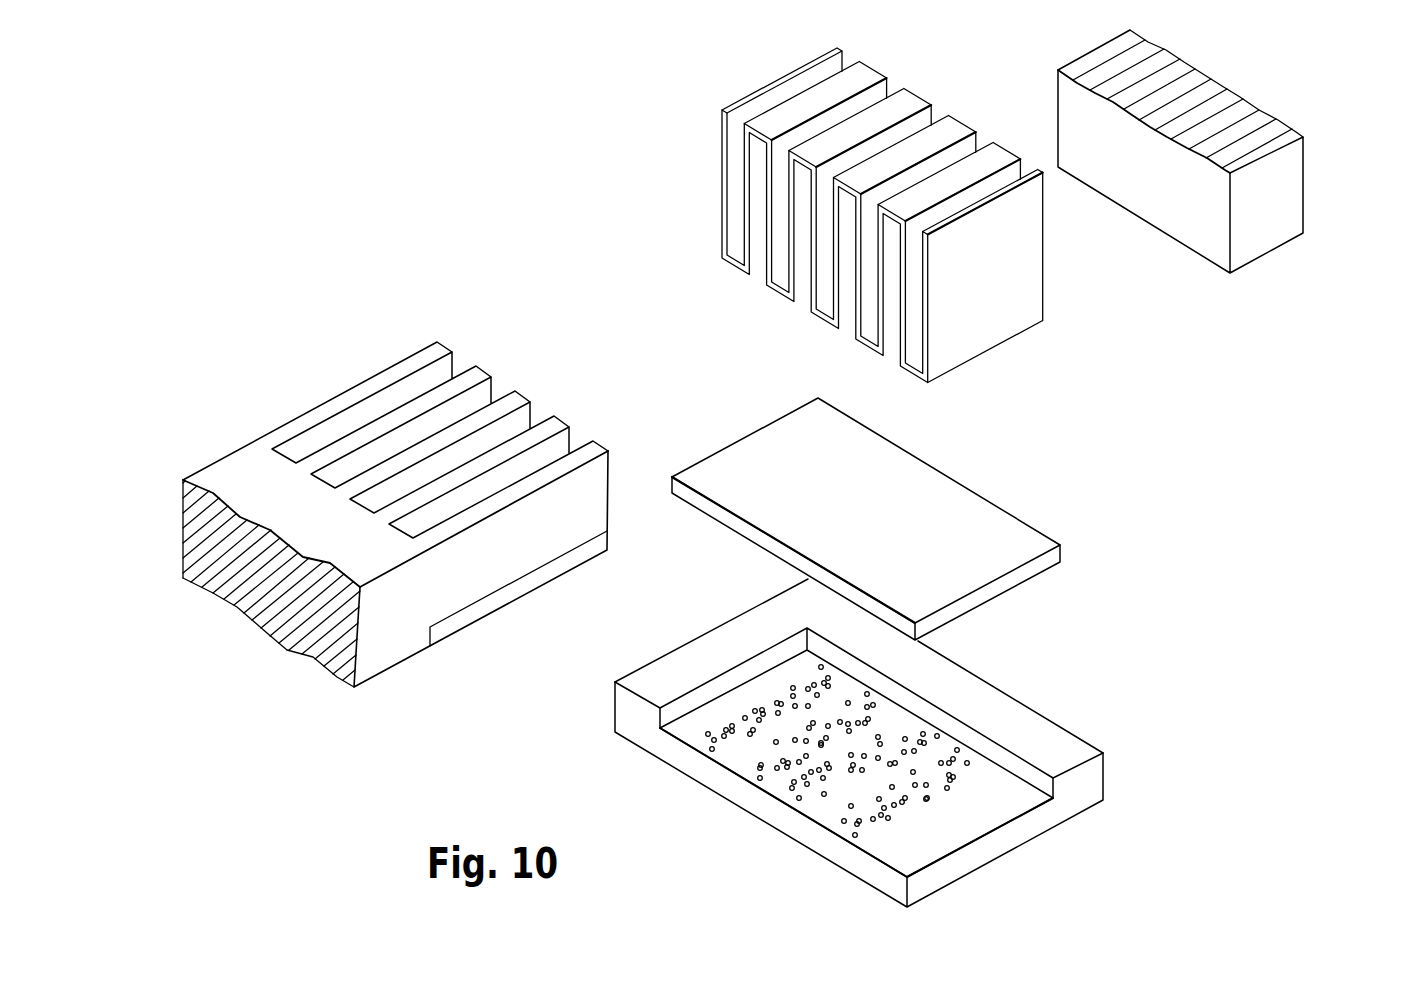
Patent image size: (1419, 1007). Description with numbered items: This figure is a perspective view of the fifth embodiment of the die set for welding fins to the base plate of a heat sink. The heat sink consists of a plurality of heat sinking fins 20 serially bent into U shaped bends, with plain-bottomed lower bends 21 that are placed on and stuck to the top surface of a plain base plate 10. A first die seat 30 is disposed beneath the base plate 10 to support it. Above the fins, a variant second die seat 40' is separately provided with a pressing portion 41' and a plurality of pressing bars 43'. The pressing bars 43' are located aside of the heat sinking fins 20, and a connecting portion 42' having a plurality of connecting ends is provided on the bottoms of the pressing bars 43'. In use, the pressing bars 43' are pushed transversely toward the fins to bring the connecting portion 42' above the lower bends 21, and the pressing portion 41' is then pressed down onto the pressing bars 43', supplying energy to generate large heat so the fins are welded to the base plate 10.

The base plate 10 is at (953, 498).
The heat sinking fins 20 is at (892, 215).
The lower bends 21 is at (730, 263).
The first die seat 30 is at (685, 763).
The second die seat 40' is at (395, 455).
The pressing portion 41' is at (1223, 151).
The connecting portion 42' is at (518, 607).
The pressing bars 43' is at (440, 410).